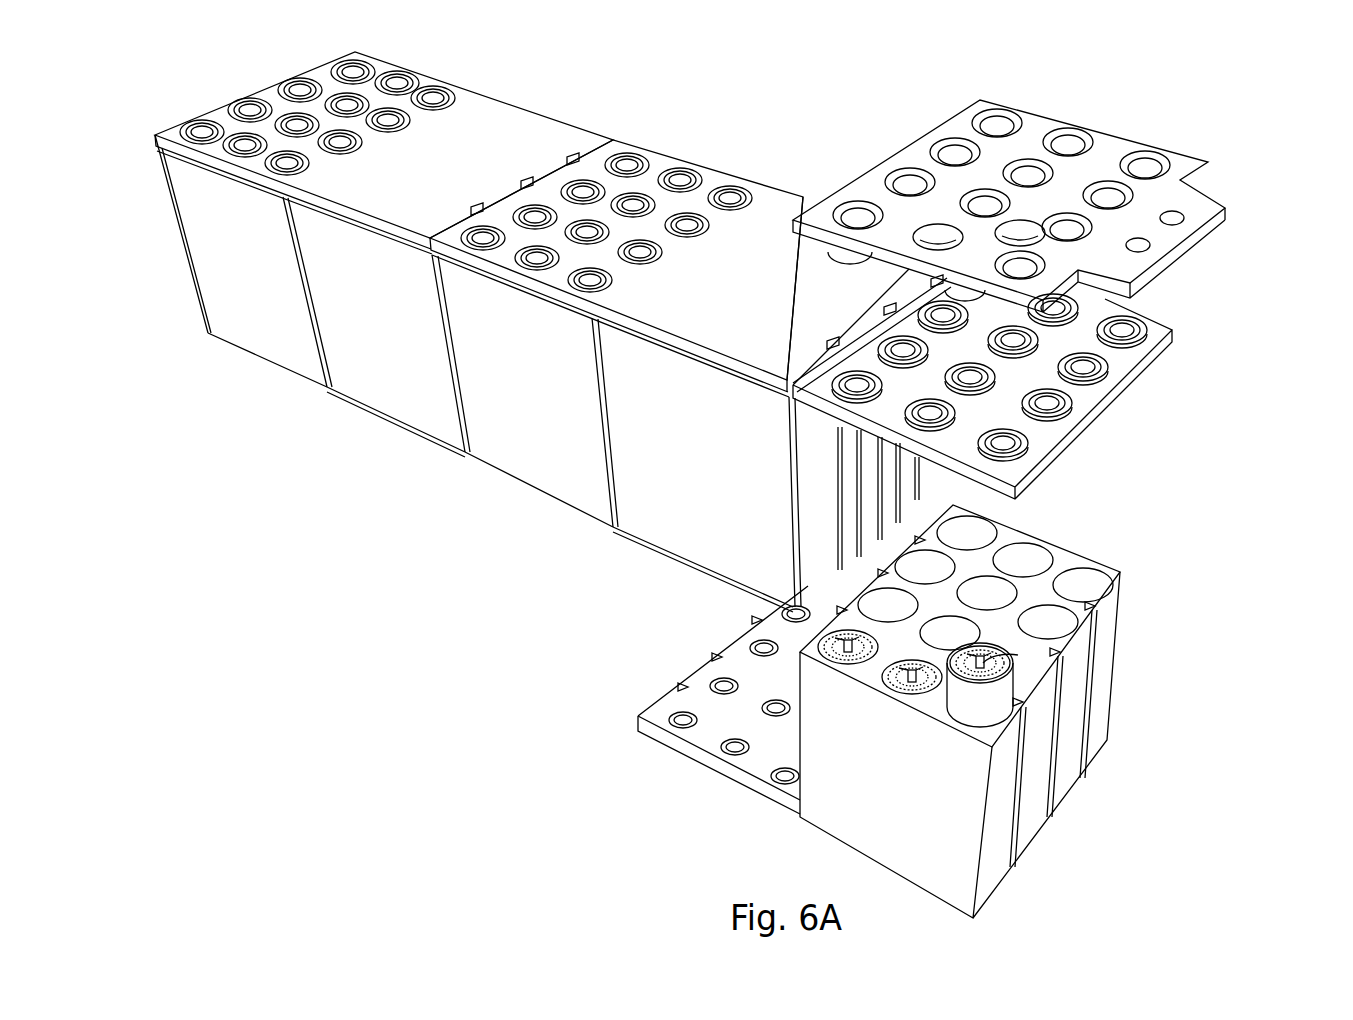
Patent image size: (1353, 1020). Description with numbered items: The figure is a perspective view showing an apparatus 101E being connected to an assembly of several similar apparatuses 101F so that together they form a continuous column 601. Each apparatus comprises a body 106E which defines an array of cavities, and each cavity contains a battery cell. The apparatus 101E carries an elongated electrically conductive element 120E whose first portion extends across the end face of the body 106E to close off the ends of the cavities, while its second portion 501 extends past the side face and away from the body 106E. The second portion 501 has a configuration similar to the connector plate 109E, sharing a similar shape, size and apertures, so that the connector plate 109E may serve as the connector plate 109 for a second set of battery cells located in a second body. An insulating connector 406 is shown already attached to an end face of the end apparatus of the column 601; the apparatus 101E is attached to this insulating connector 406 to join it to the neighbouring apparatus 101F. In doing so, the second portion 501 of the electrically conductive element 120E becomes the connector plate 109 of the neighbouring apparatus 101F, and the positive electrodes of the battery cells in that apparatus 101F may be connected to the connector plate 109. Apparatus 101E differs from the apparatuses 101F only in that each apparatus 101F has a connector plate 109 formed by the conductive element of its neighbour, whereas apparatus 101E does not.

The column 601 is at (1233, 795).
The apparatus 101E is at (233, 230).
The apparatus 101F is at (537, 337).
The body 106E is at (243, 310).
The insulating connector 406 is at (307, 322).
The connector plate 109 is at (660, 163).
The connector plate 109E is at (1198, 207).
The electrically conductive element 120E is at (688, 742).
The second portion 501 is at (713, 183).